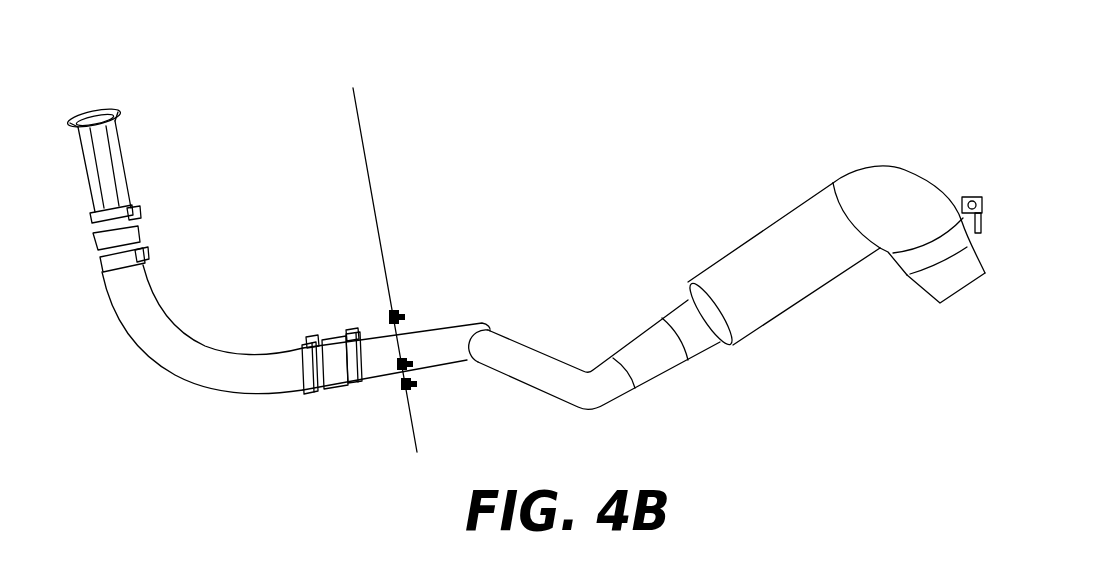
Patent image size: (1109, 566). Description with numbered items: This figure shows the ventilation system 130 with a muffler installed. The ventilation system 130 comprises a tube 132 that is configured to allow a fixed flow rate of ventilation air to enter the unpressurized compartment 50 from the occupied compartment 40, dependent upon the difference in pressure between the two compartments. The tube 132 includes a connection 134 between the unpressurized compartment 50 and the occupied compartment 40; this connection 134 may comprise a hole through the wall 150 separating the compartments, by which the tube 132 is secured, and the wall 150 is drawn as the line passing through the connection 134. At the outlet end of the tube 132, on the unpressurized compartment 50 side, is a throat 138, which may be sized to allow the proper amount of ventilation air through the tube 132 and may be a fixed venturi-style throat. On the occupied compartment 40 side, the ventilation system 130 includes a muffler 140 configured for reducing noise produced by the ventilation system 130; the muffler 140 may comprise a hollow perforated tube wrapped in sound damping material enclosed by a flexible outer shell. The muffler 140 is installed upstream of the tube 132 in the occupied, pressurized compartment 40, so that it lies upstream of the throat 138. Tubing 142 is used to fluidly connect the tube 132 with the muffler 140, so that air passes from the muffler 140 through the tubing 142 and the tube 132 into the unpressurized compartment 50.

The ventilation system 130 is at (180, 88).
The throat 138 is at (130, 182).
The tube 132 is at (160, 299).
The connection 134 is at (402, 322).
The tubing 142 is at (605, 393).
The muffler 140 is at (783, 215).
The wall 150 is at (366, 163).
The occupied compartment 40 is at (524, 178).
The unpressurized compartment 50 is at (237, 449).